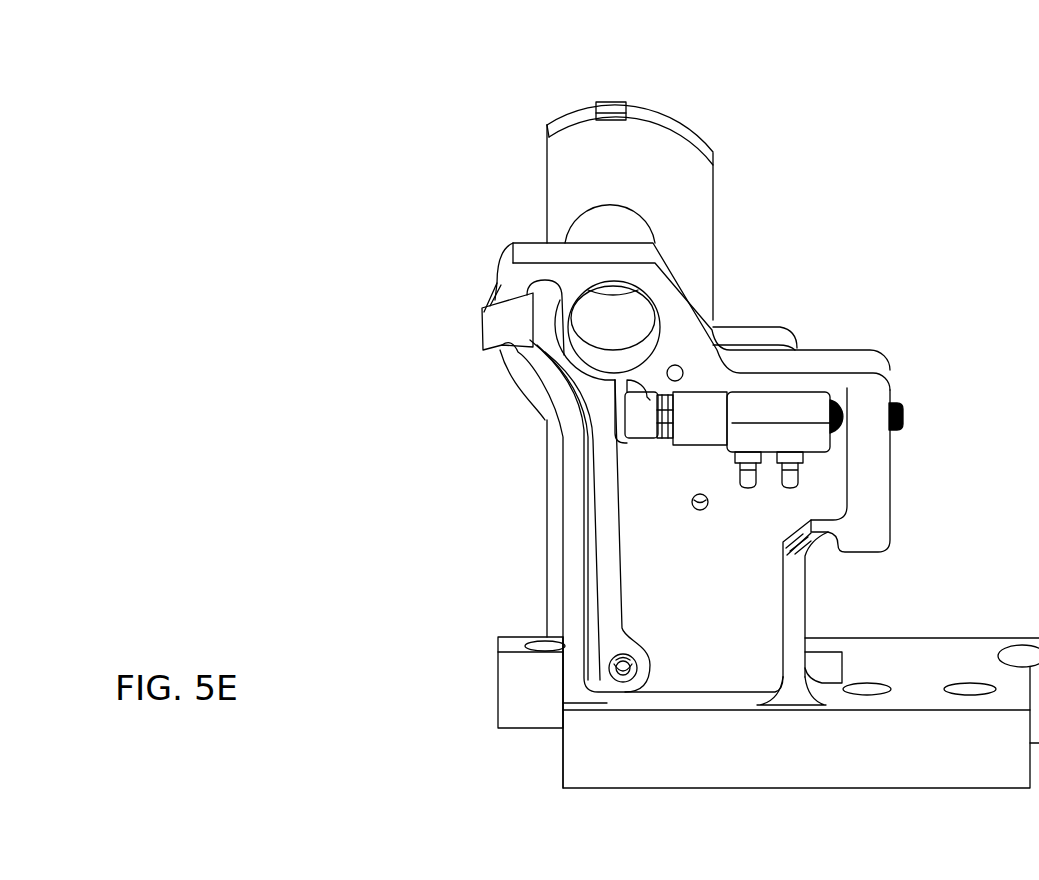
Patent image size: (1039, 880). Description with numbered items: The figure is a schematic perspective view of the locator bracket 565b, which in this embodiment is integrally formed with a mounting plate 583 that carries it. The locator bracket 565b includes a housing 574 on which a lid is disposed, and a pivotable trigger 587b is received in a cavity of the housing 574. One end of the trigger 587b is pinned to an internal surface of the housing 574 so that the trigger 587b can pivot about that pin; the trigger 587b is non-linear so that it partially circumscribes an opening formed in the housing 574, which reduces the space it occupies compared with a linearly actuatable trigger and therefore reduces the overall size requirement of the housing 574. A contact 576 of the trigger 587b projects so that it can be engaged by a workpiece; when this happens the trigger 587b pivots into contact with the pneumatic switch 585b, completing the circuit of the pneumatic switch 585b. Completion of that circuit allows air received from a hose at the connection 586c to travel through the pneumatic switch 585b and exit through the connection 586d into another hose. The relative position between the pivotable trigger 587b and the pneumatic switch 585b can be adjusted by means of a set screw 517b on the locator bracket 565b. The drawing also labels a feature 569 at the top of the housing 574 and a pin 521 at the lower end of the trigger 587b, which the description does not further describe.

The alignment tab 569 is at (608, 102).
The housing 574 is at (800, 410).
The pneumatic switch 585b is at (802, 363).
The locator bracket 565b is at (882, 362).
The set screw 517b is at (913, 410).
The connection 586c is at (800, 472).
The connection 586d is at (813, 537).
The pivotable trigger 587b is at (610, 558).
The contact 576 is at (502, 330).
The pivot pin 521 is at (622, 682).
The mounting plate 583 is at (882, 762).